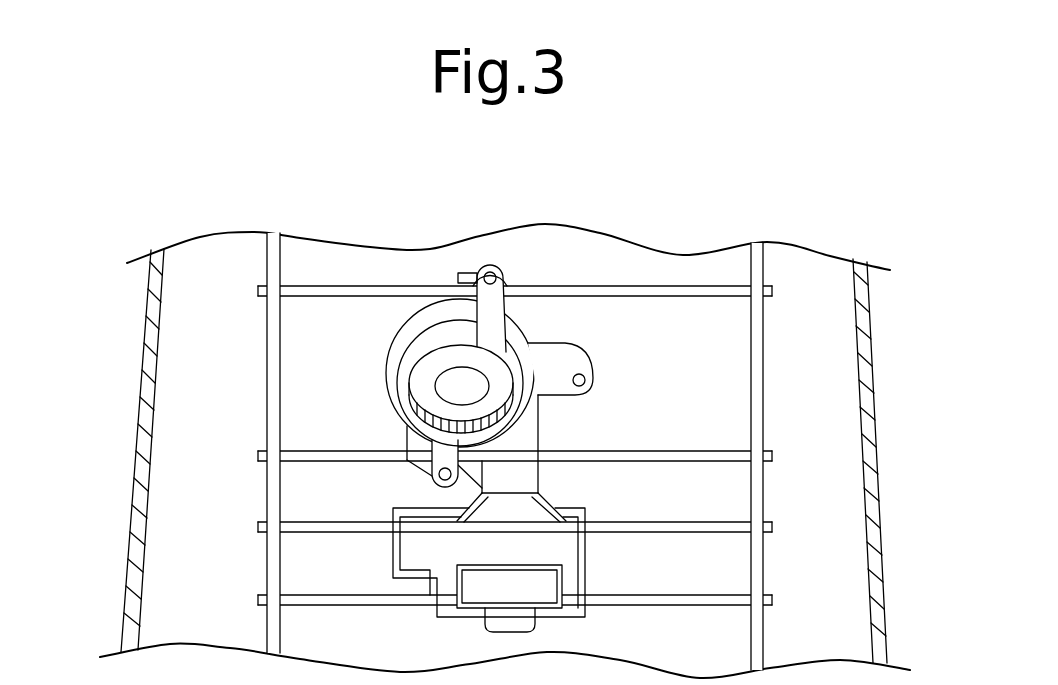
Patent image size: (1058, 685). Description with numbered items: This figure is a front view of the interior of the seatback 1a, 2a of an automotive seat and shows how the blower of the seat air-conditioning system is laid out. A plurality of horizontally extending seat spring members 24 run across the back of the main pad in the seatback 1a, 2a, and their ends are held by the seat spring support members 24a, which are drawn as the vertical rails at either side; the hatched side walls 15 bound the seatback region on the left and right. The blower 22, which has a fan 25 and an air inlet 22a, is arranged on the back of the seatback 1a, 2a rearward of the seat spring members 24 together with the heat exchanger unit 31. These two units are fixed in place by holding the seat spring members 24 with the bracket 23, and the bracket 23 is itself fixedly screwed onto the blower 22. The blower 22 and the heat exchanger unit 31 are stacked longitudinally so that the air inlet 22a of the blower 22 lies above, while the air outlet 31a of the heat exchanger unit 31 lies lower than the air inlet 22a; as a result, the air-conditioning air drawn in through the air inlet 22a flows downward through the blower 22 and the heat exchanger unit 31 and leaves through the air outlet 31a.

The seatback 1a is at (134, 472).
The seatback 2a is at (872, 352).
The panel 15 is at (153, 325).
The blower 22 is at (572, 338).
The air inlet 22a is at (440, 362).
The bracket 23 is at (508, 343).
The seat spring members 24 is at (638, 288).
The seat spring support members 24a is at (268, 314).
The fan 25 is at (386, 376).
The heat exchanger unit 31 is at (592, 542).
The air outlet 31a is at (540, 597).